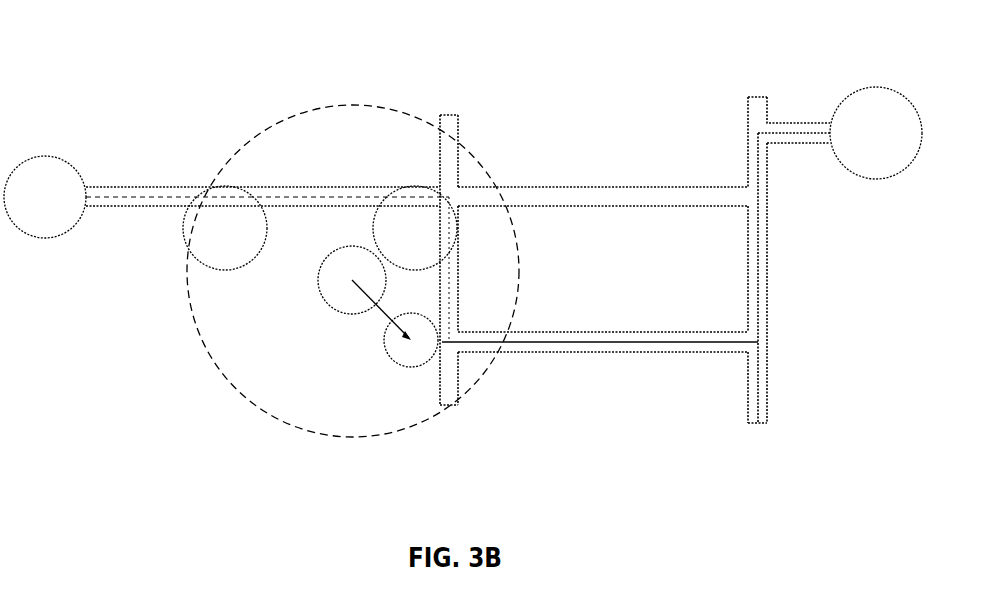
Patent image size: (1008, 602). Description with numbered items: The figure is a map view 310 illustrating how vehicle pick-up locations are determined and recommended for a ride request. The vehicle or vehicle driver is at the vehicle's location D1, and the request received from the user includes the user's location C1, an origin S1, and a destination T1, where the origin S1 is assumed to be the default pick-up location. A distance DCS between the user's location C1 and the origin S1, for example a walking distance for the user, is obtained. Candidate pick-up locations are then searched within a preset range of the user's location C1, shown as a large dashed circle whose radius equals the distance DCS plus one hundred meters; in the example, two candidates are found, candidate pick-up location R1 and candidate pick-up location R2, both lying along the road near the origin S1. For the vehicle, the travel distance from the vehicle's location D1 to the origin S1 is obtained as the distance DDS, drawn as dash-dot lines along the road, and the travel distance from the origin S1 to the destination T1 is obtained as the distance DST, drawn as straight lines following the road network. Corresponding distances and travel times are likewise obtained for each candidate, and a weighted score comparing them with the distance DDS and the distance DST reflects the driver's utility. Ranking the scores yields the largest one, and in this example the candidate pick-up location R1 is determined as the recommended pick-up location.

The map diagram of ride pick-up scenario 310 is at (83, 53).
The vehicle's location D1 is at (45, 215).
The candidate pick-up location 2 R2 is at (225, 246).
The candidate pick-up location 1 R1 is at (415, 246).
The user's location C1 is at (352, 299).
The origin S1 is at (411, 359).
The destination T1 is at (876, 151).
The travel distance from D1 to S1 DDS is at (133, 190).
The distance between C1 and S1 DCS is at (381, 310).
The travel distance from S1 to T1 DST is at (583, 336).